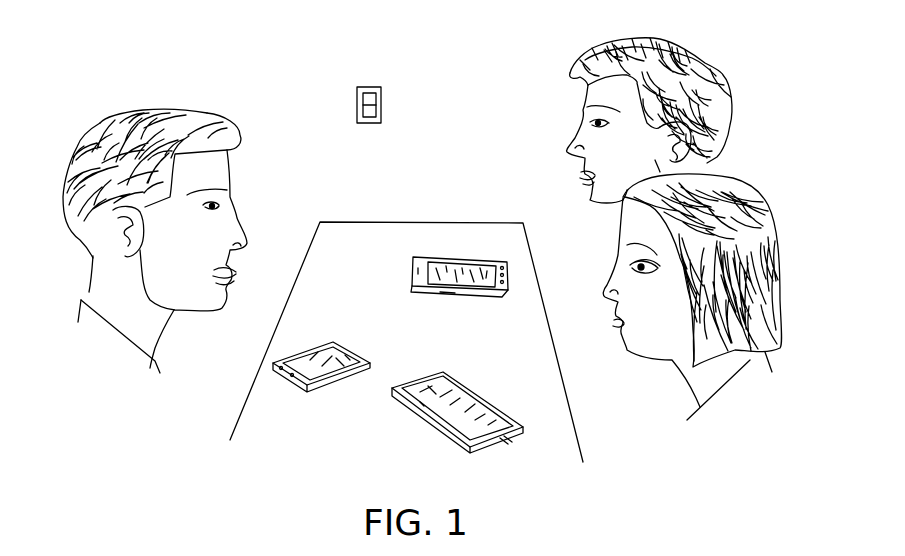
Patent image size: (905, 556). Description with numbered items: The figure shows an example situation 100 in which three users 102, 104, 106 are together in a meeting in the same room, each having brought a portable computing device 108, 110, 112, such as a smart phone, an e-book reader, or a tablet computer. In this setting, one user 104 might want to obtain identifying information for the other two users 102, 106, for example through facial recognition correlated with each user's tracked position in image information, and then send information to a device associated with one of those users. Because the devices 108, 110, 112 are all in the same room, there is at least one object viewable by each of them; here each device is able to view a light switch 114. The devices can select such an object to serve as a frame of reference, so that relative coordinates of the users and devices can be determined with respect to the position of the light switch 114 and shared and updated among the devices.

The example situation 100 is at (748, 75).
The user 102 is at (733, 408).
The user 104 is at (267, 147).
The user 106 is at (550, 80).
The portable computing device 108 is at (497, 444).
The portable computing device 110 is at (313, 385).
The portable computing device 112 is at (410, 272).
The light switch 114 is at (382, 97).